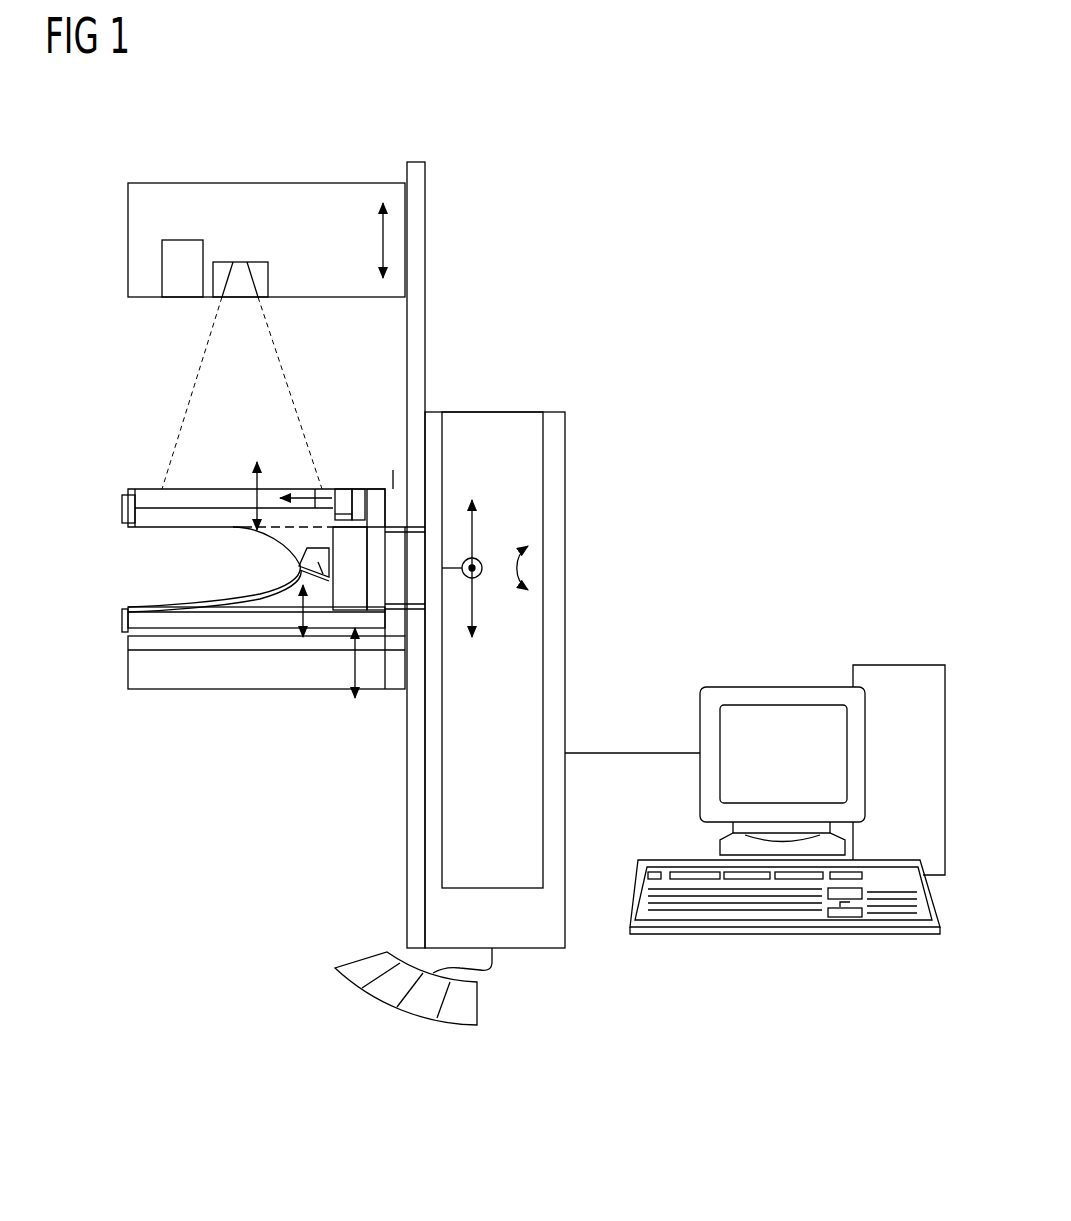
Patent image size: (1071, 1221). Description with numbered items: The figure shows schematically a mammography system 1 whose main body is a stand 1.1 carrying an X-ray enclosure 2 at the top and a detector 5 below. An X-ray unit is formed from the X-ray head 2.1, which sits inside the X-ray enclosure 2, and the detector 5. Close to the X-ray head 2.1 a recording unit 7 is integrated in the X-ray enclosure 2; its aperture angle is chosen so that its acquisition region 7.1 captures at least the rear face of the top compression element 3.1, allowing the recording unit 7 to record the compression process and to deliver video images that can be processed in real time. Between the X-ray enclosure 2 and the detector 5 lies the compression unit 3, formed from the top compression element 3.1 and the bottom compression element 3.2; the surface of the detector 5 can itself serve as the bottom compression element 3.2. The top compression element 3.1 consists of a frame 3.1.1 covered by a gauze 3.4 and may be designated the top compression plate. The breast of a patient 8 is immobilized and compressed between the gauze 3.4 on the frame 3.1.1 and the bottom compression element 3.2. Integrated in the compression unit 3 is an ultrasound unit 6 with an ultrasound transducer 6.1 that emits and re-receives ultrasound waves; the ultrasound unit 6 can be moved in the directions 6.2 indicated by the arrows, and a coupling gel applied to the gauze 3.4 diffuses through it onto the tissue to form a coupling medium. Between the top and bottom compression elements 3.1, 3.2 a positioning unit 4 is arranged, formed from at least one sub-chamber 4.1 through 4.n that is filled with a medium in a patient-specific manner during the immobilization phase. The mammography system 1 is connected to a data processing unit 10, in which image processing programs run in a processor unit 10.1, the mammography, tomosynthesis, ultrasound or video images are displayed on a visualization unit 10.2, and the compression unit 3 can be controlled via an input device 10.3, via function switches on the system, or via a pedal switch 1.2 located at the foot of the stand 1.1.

The mammography system 1 is at (500, 115).
The stand 1.1 is at (553, 483).
The pedal switch 1.2 is at (457, 1012).
The X-ray enclosure 2 is at (375, 183).
The X-ray head 2.1 is at (177, 263).
The compression unit 3 is at (272, 497).
The top compression element 3.1 is at (175, 489).
The frame of the top compression element 3.1.1 is at (125, 512).
The bottom compression element 3.2 is at (132, 620).
The gauze 3.4 is at (165, 530).
The positioning unit 4 is at (293, 588).
The sub-chamber of the positioning unit 4.1 is at (260, 602).
The sub-chamber of the positioning unit 4.n is at (320, 565).
The detector 5 is at (158, 680).
The ultrasound unit 6 is at (343, 497).
The ultrasound transducer 6.1 is at (385, 495).
The directions of movement of the ultrasound unit 6.2 is at (315, 489).
The recording unit 7 is at (270, 277).
The acquisition region 7.1 is at (197, 368).
The patient 8 is at (202, 550).
The data processing unit 10 is at (816, 553).
The processor unit 10.1 is at (903, 680).
The visualization unit 10.2 is at (783, 697).
The input device 10.3 is at (783, 915).